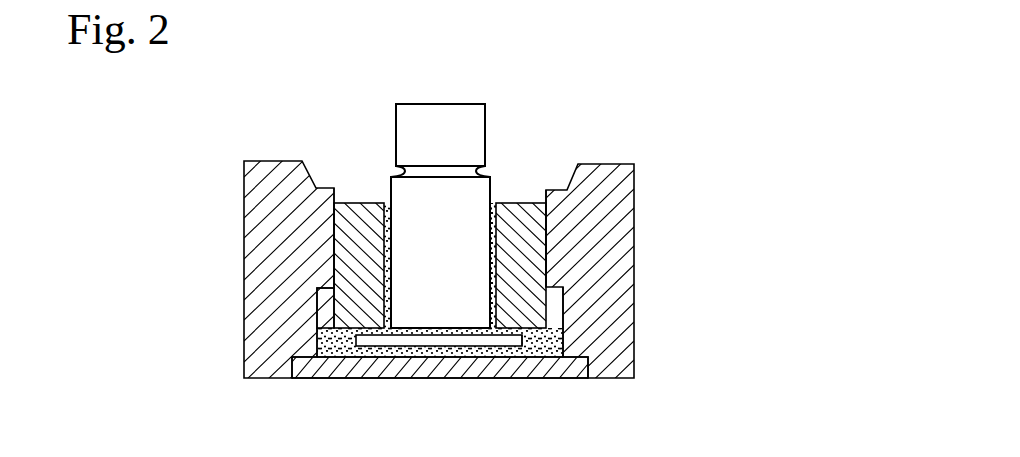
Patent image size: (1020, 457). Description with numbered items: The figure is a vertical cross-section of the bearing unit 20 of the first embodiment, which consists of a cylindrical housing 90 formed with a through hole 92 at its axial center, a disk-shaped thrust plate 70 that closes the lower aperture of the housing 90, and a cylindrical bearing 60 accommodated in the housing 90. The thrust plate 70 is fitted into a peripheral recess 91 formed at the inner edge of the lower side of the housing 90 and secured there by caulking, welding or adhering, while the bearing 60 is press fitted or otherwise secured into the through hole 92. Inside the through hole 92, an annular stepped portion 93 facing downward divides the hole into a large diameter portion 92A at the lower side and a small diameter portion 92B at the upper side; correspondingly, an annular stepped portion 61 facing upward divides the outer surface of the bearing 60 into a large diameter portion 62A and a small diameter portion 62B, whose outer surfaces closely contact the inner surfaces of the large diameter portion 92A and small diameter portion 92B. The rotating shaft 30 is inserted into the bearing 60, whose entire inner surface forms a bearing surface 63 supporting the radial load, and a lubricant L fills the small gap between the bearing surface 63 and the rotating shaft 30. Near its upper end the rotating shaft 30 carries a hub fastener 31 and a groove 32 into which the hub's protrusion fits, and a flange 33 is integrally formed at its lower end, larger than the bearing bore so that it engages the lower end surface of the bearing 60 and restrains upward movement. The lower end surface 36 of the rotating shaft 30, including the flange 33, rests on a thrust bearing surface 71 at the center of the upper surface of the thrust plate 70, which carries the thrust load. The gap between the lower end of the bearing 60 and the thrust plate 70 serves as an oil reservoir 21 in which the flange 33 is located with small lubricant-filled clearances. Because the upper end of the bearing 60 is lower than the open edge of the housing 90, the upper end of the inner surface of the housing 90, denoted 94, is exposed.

The bearing unit 20 is at (232, 229).
The oil reservoir 21 is at (562, 338).
The rotating shaft 30 is at (436, 182).
The hub fastener 31 is at (396, 123).
The groove 32 is at (482, 172).
The flange 33 is at (375, 357).
The lower end surface 36 is at (432, 355).
The bearing 60 is at (519, 203).
The stepped portion 61 is at (331, 287).
The large diameter portion 62A is at (563, 303).
The small diameter portion 62B is at (545, 258).
The bearing surface 63 is at (390, 275).
The thrust plate 70 is at (547, 380).
The thrust bearing surface 71 is at (418, 343).
The housing 90 is at (637, 215).
The peripheral recess 91 is at (317, 350).
The through hole 92 is at (342, 242).
The large diameter portion 92A is at (543, 340).
The small diameter portion 92B is at (527, 230).
The stepped portion 93 is at (333, 290).
The upper end of the inner surface of the housing 94 is at (337, 190).
The lubricant L is at (522, 350).